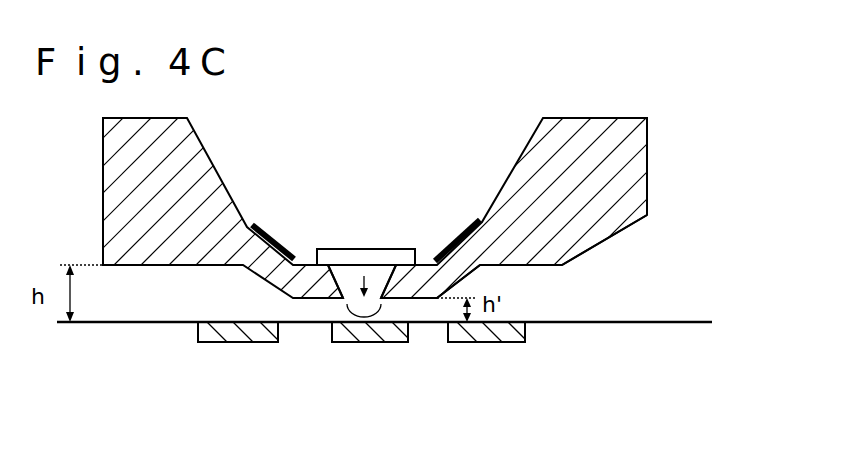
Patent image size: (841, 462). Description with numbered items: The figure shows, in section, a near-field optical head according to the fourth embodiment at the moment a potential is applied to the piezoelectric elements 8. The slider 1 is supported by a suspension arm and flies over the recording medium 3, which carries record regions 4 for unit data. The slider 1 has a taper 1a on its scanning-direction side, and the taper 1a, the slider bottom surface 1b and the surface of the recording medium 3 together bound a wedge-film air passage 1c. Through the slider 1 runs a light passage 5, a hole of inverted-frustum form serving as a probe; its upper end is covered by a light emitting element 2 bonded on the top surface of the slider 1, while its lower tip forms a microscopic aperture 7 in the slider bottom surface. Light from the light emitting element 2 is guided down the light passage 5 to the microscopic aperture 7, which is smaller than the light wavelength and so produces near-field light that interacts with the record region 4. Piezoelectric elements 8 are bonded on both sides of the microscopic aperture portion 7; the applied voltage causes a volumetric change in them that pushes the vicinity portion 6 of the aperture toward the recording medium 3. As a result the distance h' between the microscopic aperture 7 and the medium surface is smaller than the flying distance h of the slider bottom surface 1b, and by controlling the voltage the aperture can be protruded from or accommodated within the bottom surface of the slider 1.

The slider 1 is at (632, 118).
The taper 1a is at (598, 240).
The slider bottom surface 1b is at (517, 265).
The air passage 1c is at (556, 289).
The light emitting element 2 is at (382, 257).
The recording medium 3 is at (384, 341).
The record region 4 is at (497, 333).
The light passage 5 is at (353, 280).
The protruding portion 6 is at (318, 298).
The microscopic aperture 7 is at (375, 312).
The piezoelectric element 8 is at (453, 243).